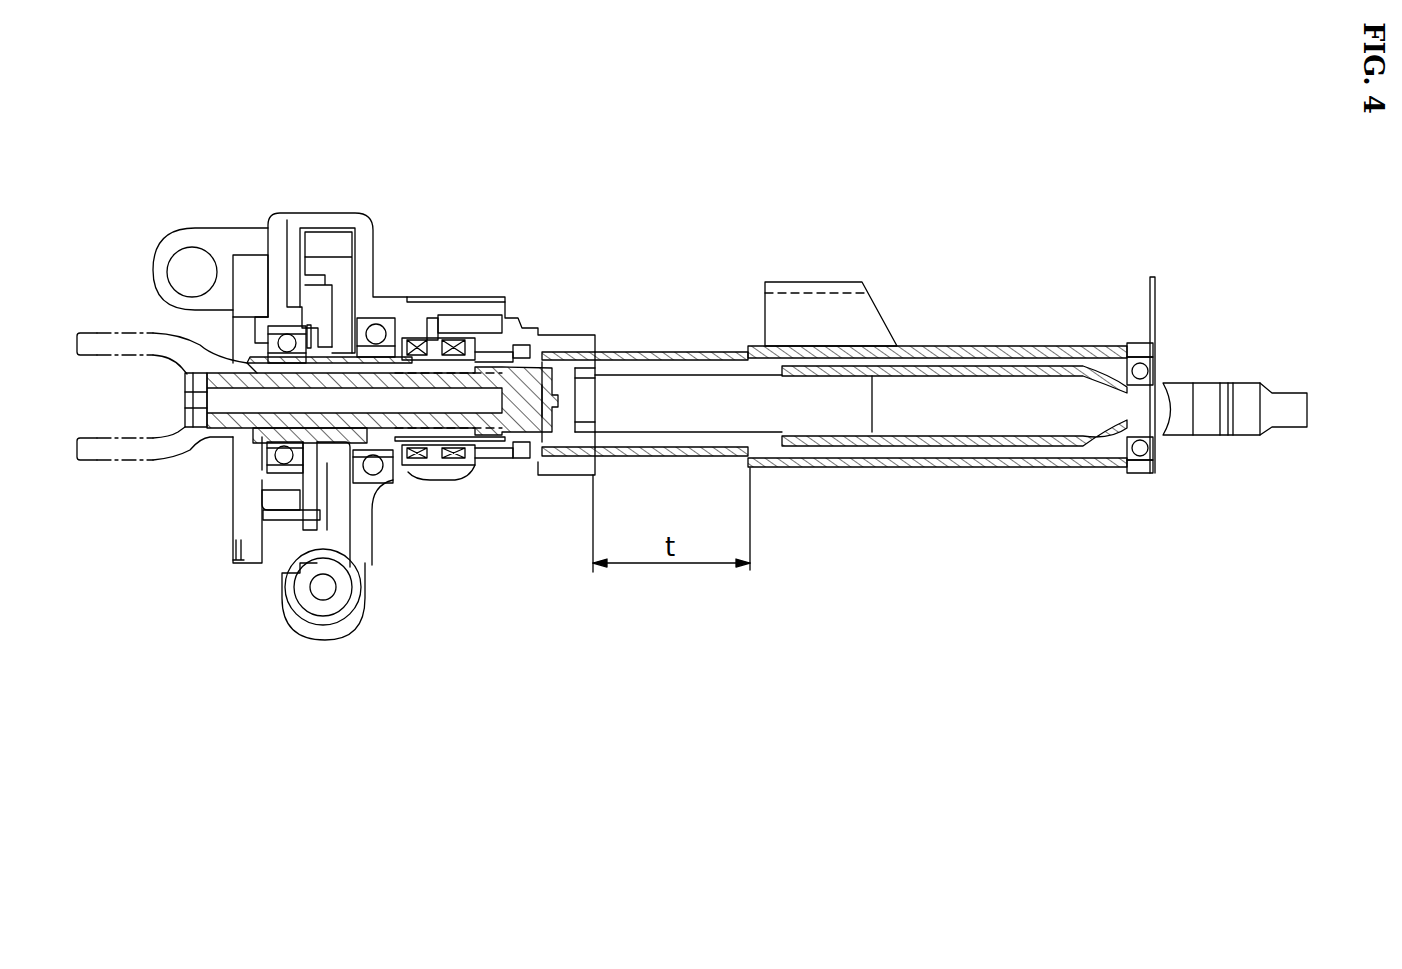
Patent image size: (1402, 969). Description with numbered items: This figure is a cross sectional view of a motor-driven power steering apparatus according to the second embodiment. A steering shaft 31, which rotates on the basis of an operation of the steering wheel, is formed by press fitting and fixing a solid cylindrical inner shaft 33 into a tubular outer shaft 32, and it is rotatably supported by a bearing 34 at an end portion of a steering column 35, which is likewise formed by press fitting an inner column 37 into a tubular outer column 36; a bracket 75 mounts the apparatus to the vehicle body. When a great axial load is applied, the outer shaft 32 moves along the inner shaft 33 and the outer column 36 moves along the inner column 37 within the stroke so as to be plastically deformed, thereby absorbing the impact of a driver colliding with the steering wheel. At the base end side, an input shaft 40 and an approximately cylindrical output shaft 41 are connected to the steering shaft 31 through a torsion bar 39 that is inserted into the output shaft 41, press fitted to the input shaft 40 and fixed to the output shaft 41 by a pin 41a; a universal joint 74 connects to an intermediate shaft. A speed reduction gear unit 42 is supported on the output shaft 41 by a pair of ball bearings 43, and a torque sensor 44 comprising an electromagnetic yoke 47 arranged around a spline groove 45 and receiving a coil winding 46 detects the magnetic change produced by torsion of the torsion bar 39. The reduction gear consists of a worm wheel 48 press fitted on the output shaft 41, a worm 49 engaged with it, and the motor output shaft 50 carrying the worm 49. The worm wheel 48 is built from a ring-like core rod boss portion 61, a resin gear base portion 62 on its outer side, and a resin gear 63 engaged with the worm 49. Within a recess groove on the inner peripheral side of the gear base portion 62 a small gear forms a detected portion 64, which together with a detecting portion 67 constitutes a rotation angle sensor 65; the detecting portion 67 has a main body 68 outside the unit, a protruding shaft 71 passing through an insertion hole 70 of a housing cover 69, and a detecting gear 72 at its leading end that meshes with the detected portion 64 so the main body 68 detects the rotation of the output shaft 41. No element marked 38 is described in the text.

The steering shaft 31 is at (1252, 382).
The outer shaft 32 is at (1033, 442).
The inner shaft 33 is at (722, 452).
The bearing 34 is at (1138, 472).
The steering column 35 is at (1032, 340).
The outer column 36 is at (985, 346).
The inner column 37 is at (723, 352).
The flange 38 is at (1160, 297).
The torsion bar 39 is at (403, 400).
The input shaft 40 is at (562, 477).
The output shaft 41 is at (250, 365).
The pin 41a is at (207, 397).
The speed reduction gear unit 42 is at (352, 648).
The ball bearings 43 is at (262, 465).
The torque sensor 44 is at (478, 472).
The spline groove 45 is at (413, 367).
The coil winding 46 is at (452, 458).
The electromagnetic yoke 47 is at (436, 335).
The worm wheel 48 is at (363, 118).
The worm 49 is at (345, 600).
The output shaft of the motor 50 is at (335, 585).
The core rod boss portion 61 is at (340, 282).
The gear base portion 62 is at (330, 253).
The resin gear 63 is at (313, 238).
The detected portion 64 is at (282, 556).
The rotation angle sensor 65 is at (223, 683).
The detecting portion 67 is at (128, 543).
The main body 68 is at (262, 518).
The housing cover 69 is at (283, 273).
The insertion hole 70 is at (275, 495).
The protruding shaft 71 is at (300, 512).
The detecting gear 72 is at (313, 513).
The universal joint 74 is at (100, 468).
The bracket 75 is at (843, 313).